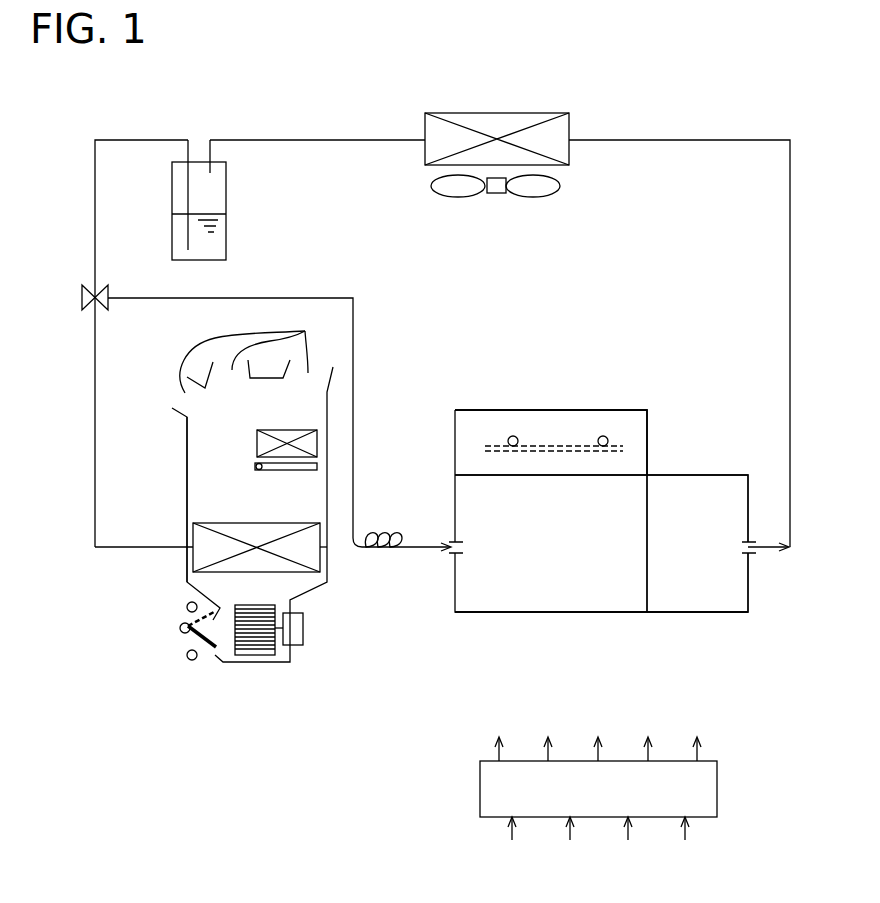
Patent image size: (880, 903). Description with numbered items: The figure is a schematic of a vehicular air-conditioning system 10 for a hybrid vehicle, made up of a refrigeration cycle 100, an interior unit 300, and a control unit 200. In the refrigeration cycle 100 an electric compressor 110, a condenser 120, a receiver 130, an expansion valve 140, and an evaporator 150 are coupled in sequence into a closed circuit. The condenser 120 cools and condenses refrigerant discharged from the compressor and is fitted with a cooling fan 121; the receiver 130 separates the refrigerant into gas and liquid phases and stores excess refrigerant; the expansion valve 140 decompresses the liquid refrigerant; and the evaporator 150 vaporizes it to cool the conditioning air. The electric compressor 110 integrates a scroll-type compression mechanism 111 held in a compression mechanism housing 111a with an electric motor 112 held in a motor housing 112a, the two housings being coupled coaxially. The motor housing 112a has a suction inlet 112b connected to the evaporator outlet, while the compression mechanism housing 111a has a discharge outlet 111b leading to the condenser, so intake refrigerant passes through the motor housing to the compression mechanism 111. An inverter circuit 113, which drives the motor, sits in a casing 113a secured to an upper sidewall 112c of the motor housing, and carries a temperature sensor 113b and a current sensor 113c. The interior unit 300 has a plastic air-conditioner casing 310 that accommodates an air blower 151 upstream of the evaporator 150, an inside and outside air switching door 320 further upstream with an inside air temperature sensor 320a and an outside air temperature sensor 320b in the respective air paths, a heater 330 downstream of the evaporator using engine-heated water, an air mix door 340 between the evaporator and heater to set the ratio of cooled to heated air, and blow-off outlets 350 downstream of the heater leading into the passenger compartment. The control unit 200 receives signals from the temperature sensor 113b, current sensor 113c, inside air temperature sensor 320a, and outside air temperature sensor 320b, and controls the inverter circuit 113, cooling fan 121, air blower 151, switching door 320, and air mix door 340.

The vehicular air-conditioning system 10 is at (293, 131).
The refrigeration cycle 100 is at (363, 136).
The electric compressor 110 is at (472, 404).
The compression mechanism 111 is at (690, 604).
The compression mechanism housing 111a is at (738, 613).
The discharge outlet 111b is at (752, 556).
The electric motor 112 is at (555, 604).
The motor housing 112a is at (606, 613).
The suction inlet 112b is at (448, 554).
The sidewall 112c is at (512, 475).
The inverter circuit 113 is at (562, 437).
The casing 113a is at (650, 406).
The temperature sensor 113b is at (513, 436).
The current sensor 113c is at (605, 436).
The condenser 120 is at (497, 113).
The cooling fan 121 is at (531, 193).
The receiver 130 is at (226, 193).
The expansion valve 140 is at (102, 304).
The evaporator 150 is at (240, 522).
The air blower 151 is at (252, 656).
The control unit 200 is at (717, 795).
The interior unit 300 is at (181, 448).
The air-conditioner casing 310 is at (187, 483).
The inside and outside air switching door 320 is at (180, 630).
The inside air temperature sensor 320a is at (187, 607).
The outside air temperature sensor 320b is at (189, 658).
The heater 330 is at (262, 447).
The air mix door 340 is at (287, 471).
The blow-off outlets 350 is at (255, 348).